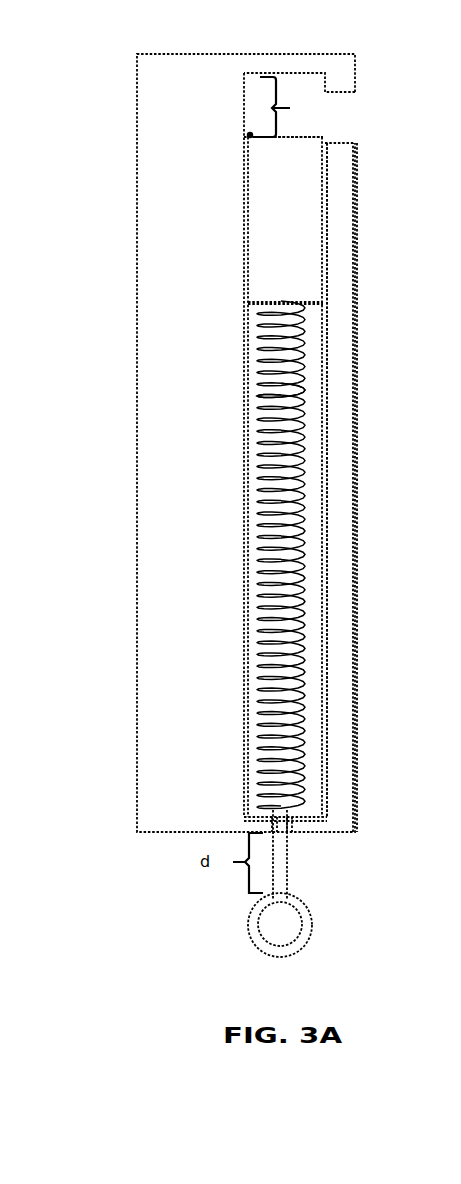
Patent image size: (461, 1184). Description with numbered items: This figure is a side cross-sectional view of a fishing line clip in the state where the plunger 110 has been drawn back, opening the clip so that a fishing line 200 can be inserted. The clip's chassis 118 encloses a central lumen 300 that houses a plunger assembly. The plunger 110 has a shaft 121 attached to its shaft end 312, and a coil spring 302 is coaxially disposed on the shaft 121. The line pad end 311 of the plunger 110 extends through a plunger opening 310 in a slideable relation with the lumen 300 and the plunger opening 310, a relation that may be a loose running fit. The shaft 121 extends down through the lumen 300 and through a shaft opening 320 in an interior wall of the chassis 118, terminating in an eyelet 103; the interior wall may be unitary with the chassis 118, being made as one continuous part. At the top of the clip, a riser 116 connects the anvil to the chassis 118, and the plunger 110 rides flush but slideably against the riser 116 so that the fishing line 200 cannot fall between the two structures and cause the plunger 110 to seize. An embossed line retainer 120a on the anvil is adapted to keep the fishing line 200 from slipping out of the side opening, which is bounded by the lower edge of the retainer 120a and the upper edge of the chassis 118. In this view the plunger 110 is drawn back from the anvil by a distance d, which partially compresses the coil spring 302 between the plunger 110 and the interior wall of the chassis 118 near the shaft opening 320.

The chassis 118 is at (211, 508).
The embossed line retainer 120a is at (340, 80).
The plunger 110 is at (302, 231).
The plunger opening 310 is at (332, 130).
The line pad end 311 is at (307, 133).
The riser 116 is at (227, 105).
The fishing line 200 is at (238, 136).
The shaft end 312 is at (315, 310).
The central lumen 300 is at (248, 432).
The coil spring 302 is at (307, 390).
The shaft opening 320 is at (292, 833).
The shaft 121 is at (280, 868).
The eyelet 103 is at (248, 922).